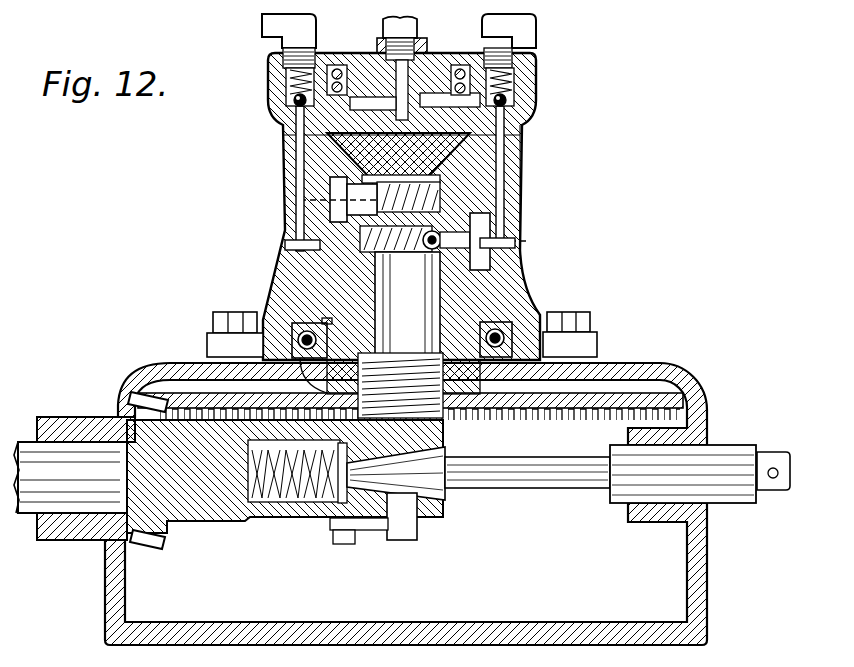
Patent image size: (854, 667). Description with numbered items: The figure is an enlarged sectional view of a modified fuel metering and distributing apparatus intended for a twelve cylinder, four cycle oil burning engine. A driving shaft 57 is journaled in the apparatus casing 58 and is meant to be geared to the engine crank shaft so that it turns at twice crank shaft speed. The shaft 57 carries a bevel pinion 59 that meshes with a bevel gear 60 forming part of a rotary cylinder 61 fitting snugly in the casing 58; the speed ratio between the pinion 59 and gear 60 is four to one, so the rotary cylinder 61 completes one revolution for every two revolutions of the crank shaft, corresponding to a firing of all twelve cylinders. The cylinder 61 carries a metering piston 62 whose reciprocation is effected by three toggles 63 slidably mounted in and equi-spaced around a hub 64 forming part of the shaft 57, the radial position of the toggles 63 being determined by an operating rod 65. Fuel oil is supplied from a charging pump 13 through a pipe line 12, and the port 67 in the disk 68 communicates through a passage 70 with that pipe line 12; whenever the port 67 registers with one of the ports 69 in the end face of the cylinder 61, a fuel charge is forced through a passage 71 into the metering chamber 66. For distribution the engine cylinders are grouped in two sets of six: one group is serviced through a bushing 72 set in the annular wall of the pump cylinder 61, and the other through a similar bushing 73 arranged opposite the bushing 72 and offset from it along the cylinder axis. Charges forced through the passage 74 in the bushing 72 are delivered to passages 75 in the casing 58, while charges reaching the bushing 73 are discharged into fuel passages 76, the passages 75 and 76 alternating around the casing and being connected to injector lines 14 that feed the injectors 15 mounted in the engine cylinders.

The pipe line 12 is at (418, 33).
The charging pump 13 is at (283, 135).
The injector lines 14 is at (262, 21).
The injectors 15 is at (418, 540).
The driving shaft 57 is at (27, 441).
The apparatus casing 58 is at (526, 318).
The bevel pinion 59 is at (160, 549).
The bevel gear 60 is at (151, 392).
The rotary cylinder 61 is at (335, 287).
The metering piston 62 is at (400, 322).
The toggles 63 is at (388, 541).
The hub 64 is at (247, 517).
The operating rod 65 is at (527, 489).
The metering chamber 66 is at (510, 170).
The port 67 is at (298, 127).
The disk 68 is at (517, 130).
The ports 69 is at (357, 143).
The passage 70 is at (387, 56).
The passage 71 is at (362, 167).
The bushing 72 is at (490, 224).
The bushing 73 is at (336, 216).
The passage 74 is at (492, 255).
The passages 75 is at (300, 234).
The fuel passages 76 is at (330, 205).